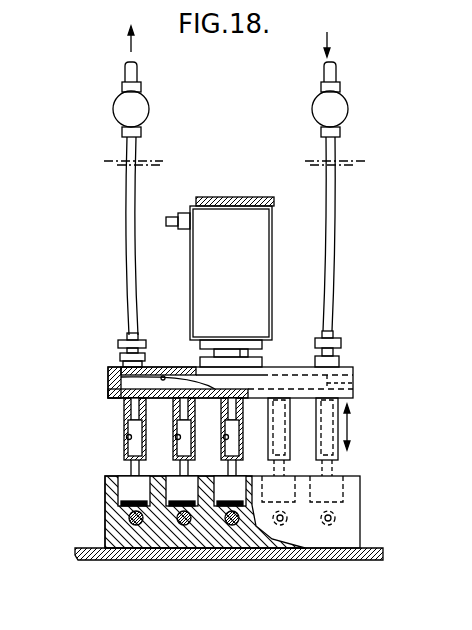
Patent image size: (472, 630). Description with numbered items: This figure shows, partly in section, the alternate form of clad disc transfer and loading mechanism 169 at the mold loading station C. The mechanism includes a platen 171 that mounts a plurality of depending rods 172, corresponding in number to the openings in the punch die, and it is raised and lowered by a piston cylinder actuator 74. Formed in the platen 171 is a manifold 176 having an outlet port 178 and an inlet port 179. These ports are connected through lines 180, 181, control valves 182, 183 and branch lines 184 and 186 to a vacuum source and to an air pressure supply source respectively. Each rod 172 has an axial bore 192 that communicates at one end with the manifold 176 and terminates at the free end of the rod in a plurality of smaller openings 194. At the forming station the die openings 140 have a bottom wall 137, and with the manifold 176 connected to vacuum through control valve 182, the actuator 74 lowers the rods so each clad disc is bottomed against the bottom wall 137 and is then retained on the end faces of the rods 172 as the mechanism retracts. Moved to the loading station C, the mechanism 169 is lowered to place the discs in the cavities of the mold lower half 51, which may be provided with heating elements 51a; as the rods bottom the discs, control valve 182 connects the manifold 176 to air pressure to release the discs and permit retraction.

The branch line 184 is at (138, 80).
The control valve 182 is at (113, 108).
The branch line 186 is at (335, 73).
The control valve 183 is at (349, 105).
The line 180 is at (126, 224).
The line 181 is at (337, 218).
The piston cylinder actuator 74 is at (247, 275).
The platen 171 is at (123, 366).
The clad disc transfer and loading mechanism 169 is at (331, 368).
The outlet port 178 is at (108, 378).
The manifold 176 is at (166, 367).
The inlet port 179 is at (354, 378).
The depending rods 172 is at (127, 422).
The axial bore 192 is at (244, 425).
The smaller openings 194 is at (135, 458).
The mold loading station C is at (368, 483).
The die openings 140 is at (108, 490).
The bottom wall 137 is at (125, 500).
The heating elements 51a is at (127, 519).
The mold lower half 51 is at (360, 532).